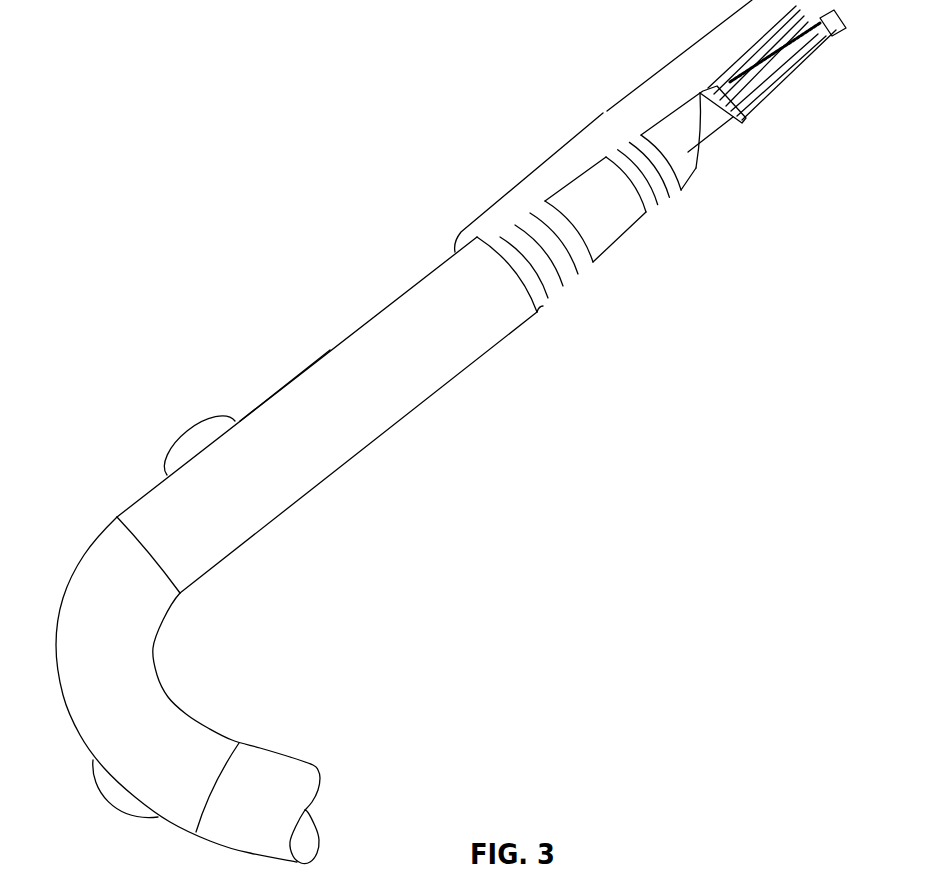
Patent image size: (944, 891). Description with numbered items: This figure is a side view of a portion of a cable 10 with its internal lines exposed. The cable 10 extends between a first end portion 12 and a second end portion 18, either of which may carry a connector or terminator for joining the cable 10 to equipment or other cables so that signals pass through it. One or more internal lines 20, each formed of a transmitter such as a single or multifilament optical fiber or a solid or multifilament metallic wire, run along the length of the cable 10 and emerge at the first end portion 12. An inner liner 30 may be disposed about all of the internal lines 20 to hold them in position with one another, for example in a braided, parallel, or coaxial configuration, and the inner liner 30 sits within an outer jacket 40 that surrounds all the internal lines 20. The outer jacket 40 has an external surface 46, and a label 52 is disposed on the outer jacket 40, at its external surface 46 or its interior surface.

The medical device assembly 10 is at (238, 99).
The housing 12 is at (607, 111).
The distal tip section 18 is at (325, 760).
The hub with conductor leads 20 is at (707, 117).
The strain relief sleeve 30 is at (560, 285).
The elongate tubular shaft 40 is at (396, 299).
The outer surface of shaft 46 is at (308, 363).
The protrusions 52 is at (192, 432).